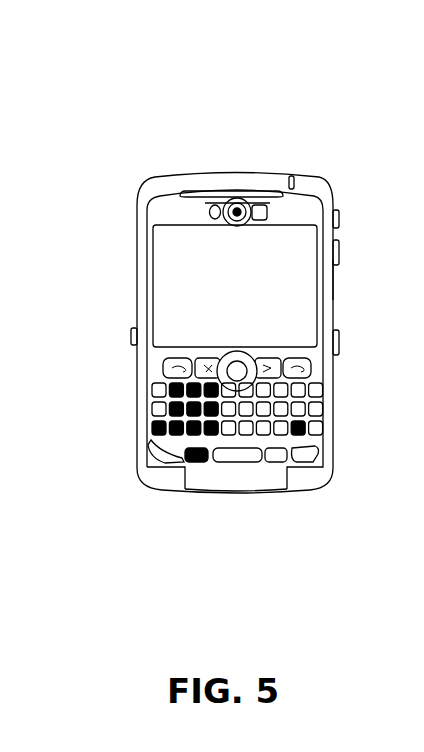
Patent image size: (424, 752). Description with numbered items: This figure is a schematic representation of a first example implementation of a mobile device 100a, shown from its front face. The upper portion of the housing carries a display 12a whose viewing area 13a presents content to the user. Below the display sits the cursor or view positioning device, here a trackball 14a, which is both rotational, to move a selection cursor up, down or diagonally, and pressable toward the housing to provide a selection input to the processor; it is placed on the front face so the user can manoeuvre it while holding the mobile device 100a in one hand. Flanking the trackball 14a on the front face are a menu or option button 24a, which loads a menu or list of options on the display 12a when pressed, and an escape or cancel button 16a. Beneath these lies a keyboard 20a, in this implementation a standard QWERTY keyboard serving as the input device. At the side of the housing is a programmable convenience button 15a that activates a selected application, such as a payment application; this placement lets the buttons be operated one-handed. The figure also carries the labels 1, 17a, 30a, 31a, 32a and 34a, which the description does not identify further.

The mobile terminal 1 is at (419, 107).
The mobile device 100a is at (122, 239).
The display 12a is at (327, 278).
The viewing area 13a is at (218, 278).
The trackball 14a is at (232, 357).
The programmable convenience button 15a is at (135, 340).
The escape or cancel button 16a is at (322, 395).
The side key 17a is at (339, 343).
The keyboard 20a is at (207, 440).
The menu or option button 24a is at (190, 373).
The camera 30a is at (237, 198).
The camera module 31a is at (273, 213).
The light sensor 32a is at (213, 203).
The flash 34a is at (260, 203).